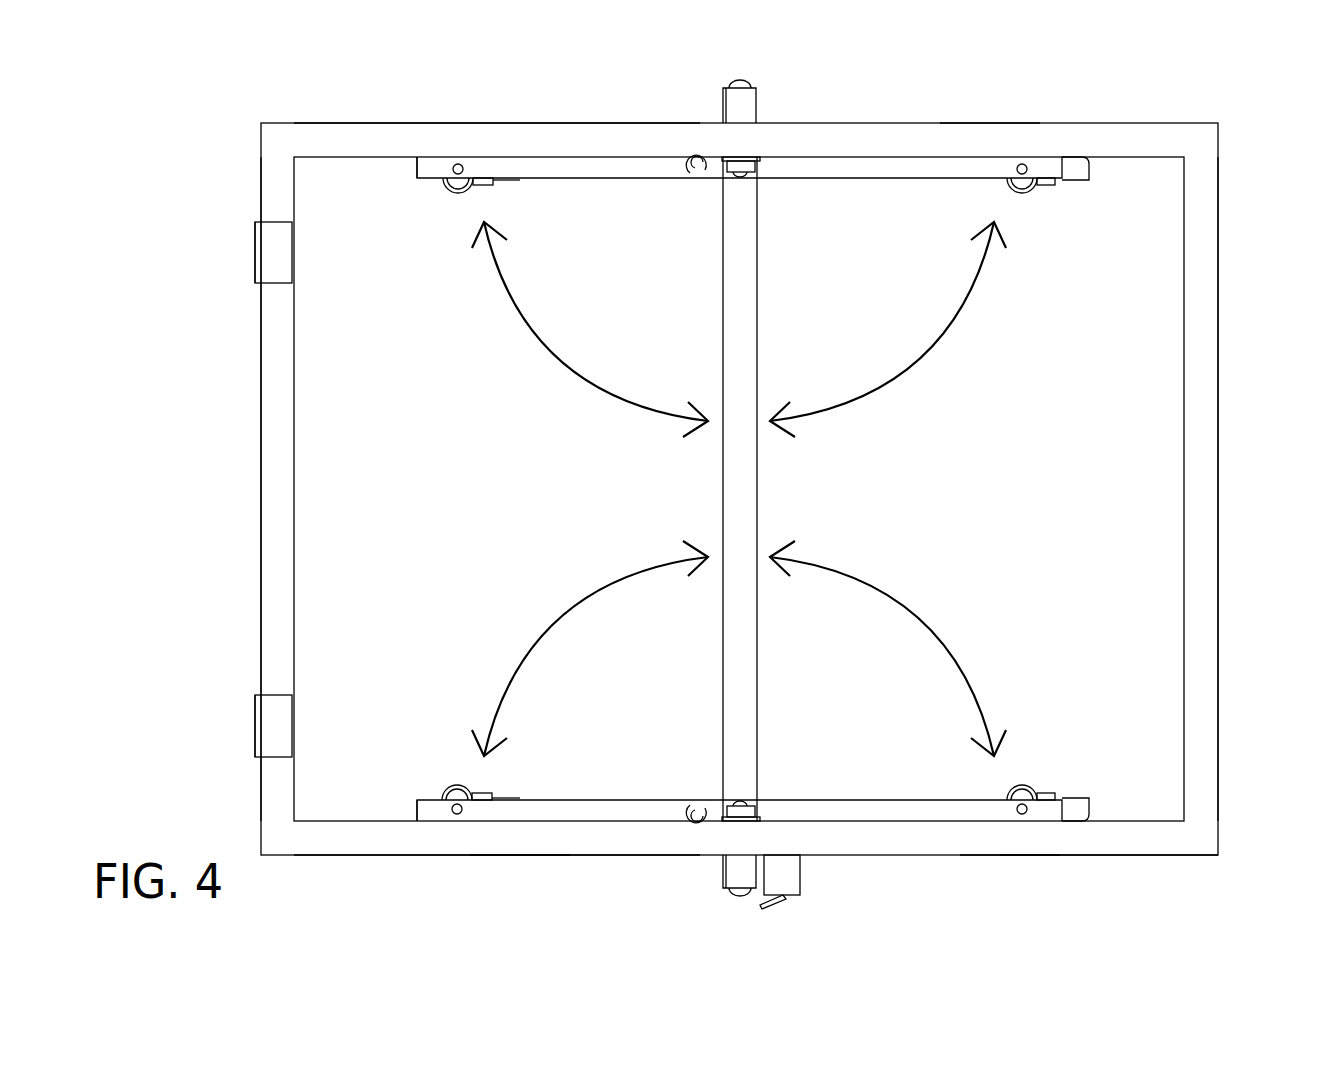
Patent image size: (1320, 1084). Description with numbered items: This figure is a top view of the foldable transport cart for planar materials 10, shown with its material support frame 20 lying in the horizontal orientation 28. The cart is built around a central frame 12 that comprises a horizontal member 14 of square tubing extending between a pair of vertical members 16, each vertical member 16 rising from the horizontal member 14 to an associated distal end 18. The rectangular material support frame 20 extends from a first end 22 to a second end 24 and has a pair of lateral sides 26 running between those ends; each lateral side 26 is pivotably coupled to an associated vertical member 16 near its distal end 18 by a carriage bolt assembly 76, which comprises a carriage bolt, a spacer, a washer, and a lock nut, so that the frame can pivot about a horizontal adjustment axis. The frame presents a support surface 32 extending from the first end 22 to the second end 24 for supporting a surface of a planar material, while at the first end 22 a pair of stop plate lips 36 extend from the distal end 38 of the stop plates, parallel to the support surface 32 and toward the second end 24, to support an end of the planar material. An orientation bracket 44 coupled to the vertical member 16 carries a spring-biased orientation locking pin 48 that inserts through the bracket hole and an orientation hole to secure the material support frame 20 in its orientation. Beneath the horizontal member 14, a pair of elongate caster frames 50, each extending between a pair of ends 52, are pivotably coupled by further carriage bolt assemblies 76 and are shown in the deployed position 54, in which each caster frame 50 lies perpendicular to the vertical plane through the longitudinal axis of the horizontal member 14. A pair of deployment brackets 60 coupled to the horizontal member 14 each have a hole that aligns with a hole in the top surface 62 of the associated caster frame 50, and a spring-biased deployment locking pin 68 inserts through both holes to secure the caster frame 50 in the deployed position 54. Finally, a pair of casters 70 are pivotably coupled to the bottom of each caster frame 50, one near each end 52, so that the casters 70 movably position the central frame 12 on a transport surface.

The foldable transport cart for planar materials 10 is at (1202, 112).
The central frame 12 is at (752, 488).
The horizontal member 14 is at (752, 674).
The vertical member 16 is at (750, 101).
The distal end 18 is at (730, 98).
The material support frame 20 is at (1207, 396).
The first end 22 is at (262, 428).
The second end 24 is at (1207, 318).
The lateral side 26 is at (453, 122).
The horizontal orientation 28 is at (1006, 888).
The support surface 32 is at (1121, 843).
The stop plate lip 36 is at (275, 258).
The distal end 38 is at (262, 235).
The orientation bracket 44 is at (788, 878).
The orientation locking pin 48 is at (788, 903).
The caster frame 50 is at (843, 170).
The end 52 is at (417, 167).
The deployed position 54 is at (991, 117).
The deployment bracket 60 is at (713, 180).
The top surface 62 is at (586, 178).
The deployment locking pin 68 is at (700, 173).
The caster 70 is at (454, 198).
The carriage bolt assembly 76 is at (733, 79).